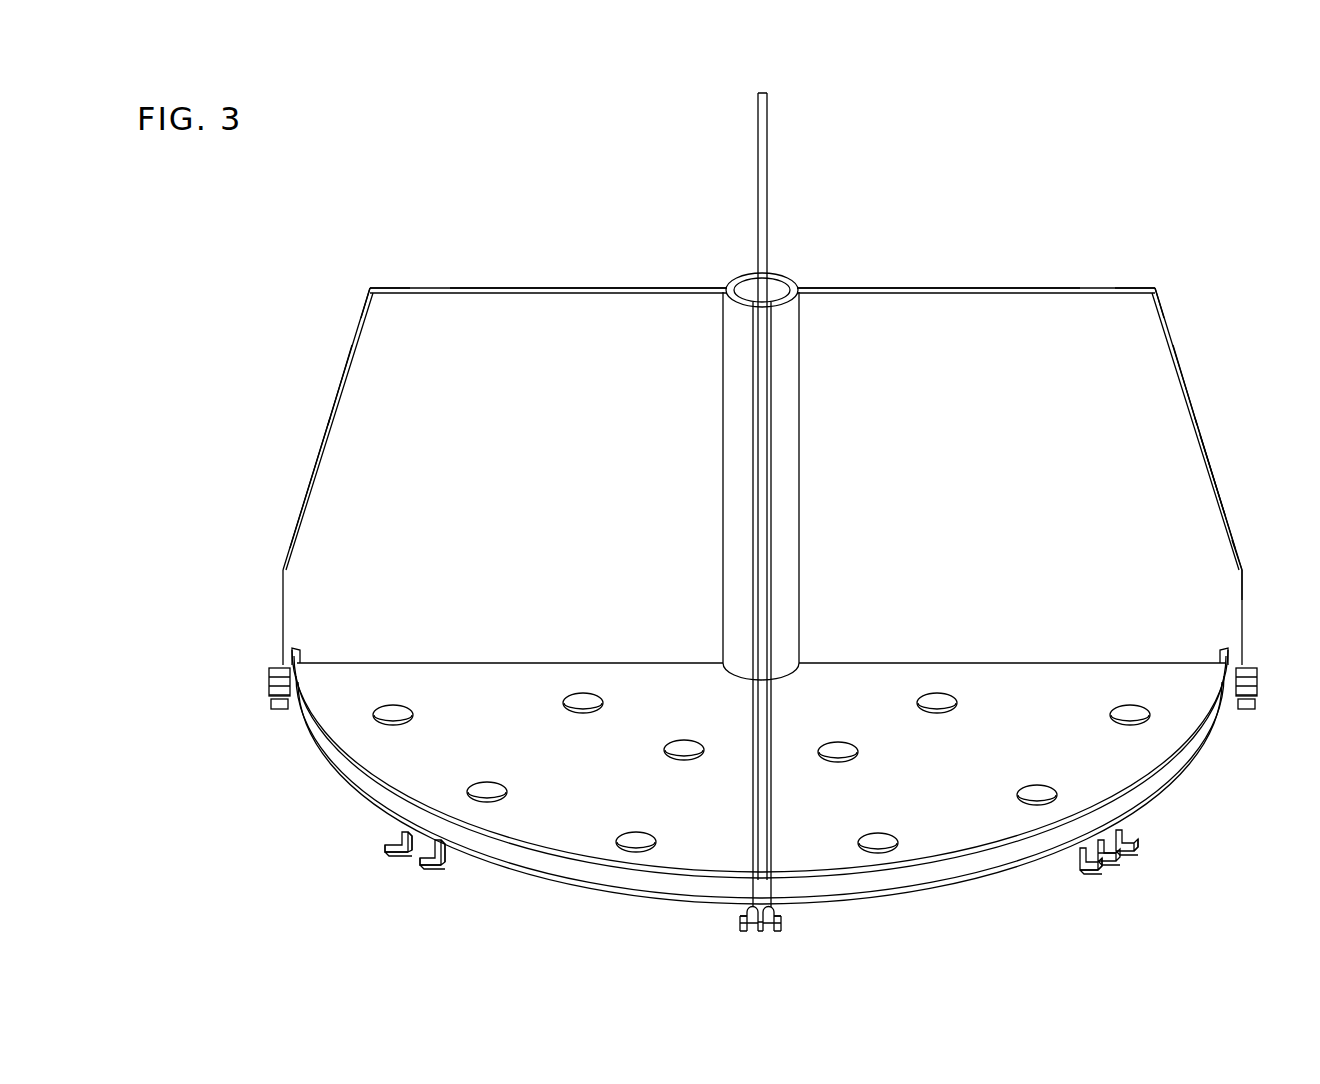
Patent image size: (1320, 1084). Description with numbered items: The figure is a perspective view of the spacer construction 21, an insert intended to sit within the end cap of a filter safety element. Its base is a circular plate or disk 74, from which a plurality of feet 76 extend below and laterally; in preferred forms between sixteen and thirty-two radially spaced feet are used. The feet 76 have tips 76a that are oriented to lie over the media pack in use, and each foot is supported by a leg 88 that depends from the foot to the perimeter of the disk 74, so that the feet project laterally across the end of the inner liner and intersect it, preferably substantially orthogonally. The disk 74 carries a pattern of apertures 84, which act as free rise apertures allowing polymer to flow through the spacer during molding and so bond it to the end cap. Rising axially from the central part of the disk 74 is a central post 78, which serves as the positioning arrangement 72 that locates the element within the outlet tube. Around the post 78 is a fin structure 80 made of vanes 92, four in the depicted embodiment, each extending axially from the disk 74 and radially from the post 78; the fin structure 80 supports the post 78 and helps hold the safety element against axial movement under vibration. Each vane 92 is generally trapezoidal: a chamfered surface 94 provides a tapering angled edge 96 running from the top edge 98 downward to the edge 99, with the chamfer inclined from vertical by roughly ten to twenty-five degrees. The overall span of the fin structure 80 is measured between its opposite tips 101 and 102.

The spacer construction 21 is at (754, 529).
The positioning arrangement 72 is at (1105, 276).
The circular plate or disk 74 is at (1138, 748).
The feet 76 is at (284, 687).
The tips 76a is at (285, 702).
The central post 78 is at (777, 272).
The fin structure 80 is at (516, 278).
The apertures 84 is at (852, 755).
The legs 88 is at (441, 858).
The vanes 92 is at (769, 165).
The chamfered surface 94 is at (305, 502).
The angled edge 96 is at (1214, 480).
The top edge 98 is at (578, 287).
The edge 99 is at (1243, 575).
The tip 101 is at (1157, 288).
The tip 102 is at (369, 287).